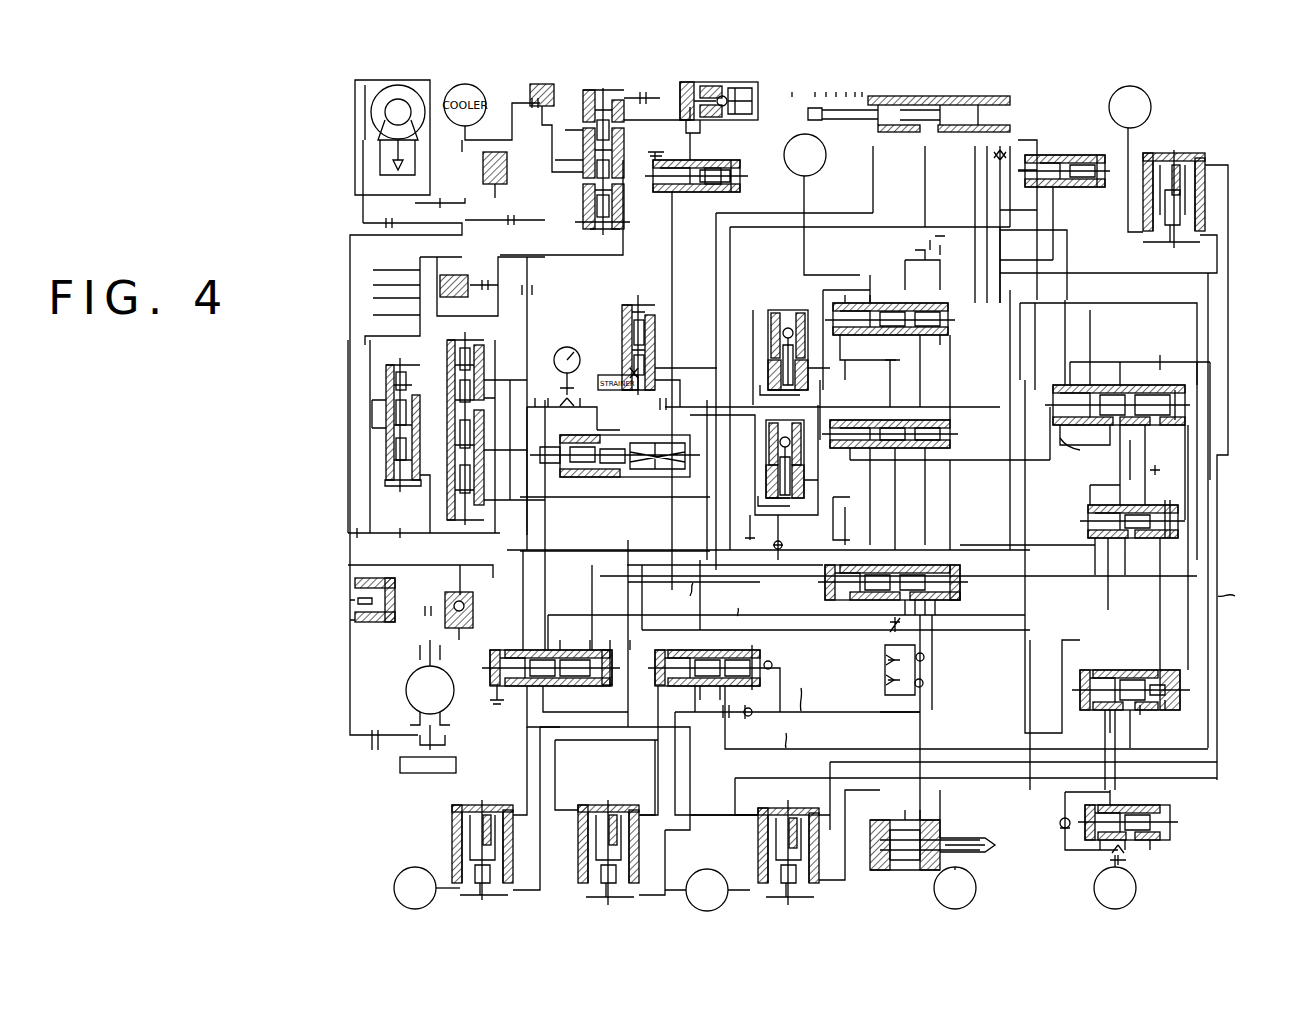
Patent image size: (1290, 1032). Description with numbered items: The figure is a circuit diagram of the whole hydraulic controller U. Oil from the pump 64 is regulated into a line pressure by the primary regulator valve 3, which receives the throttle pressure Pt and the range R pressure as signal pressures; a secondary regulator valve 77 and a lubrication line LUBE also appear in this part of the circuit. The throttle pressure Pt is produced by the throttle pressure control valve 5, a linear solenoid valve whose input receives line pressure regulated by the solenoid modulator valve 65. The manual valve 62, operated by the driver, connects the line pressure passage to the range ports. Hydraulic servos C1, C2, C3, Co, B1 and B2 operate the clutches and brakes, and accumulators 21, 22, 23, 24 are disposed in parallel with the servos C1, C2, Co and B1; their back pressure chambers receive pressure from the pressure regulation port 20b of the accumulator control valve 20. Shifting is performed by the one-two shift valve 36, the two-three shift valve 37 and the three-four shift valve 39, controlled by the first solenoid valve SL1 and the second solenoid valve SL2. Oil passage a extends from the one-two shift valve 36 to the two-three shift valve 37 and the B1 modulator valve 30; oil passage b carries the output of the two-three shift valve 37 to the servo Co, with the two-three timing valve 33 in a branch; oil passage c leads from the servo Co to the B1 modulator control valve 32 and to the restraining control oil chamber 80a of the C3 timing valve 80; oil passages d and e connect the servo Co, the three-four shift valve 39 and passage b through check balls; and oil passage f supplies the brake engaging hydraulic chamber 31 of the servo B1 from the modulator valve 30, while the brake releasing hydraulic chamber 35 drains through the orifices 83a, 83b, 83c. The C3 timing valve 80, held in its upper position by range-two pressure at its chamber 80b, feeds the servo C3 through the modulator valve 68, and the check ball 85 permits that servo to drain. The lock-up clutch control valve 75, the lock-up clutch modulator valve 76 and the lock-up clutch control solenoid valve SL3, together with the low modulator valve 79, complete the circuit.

The hydraulic controller U is at (318, 230).
The lock-up clutch control valve 75 is at (588, 92).
The lock-up clutch control solenoid valve SL3 is at (730, 80).
The lock-up clutch modulator valve 76 is at (746, 170).
The manual valve 62 is at (989, 94).
The low modulator valve 79 is at (1070, 151).
The accumulator 21 is at (1188, 150).
The hydraulic servo B2 is at (822, 204).
The hydraulic servo C1 is at (1130, 159).
The lubrication circuit LUBE is at (385, 297).
The secondary regulator valve 77 is at (374, 396).
The primary regulator valve 3 is at (504, 379).
The throttle pressure Pt is at (553, 392).
The solenoid modulator valve 65 is at (614, 324).
The throttle pressure control valve 5 is at (628, 436).
The first solenoid valve SL1 is at (767, 321).
The second solenoid valve SL2 is at (760, 462).
The 1-2 shift valve 36 is at (919, 297).
The 2-3 shift valve 37 is at (956, 440).
The B1 modulator valve 30 is at (1168, 383).
The B1 modulator control valve 32 is at (1189, 510).
The 3-4 shift valve 39 is at (968, 594).
The oil passage a is at (982, 399).
The oil passage b is at (687, 599).
The oil passage c is at (785, 730).
The oil passage d is at (800, 689).
The oil passage e is at (737, 601).
The oil passage f is at (1230, 595).
The orifice 83a is at (888, 628).
The orifice 83b is at (882, 658).
The orifice 83c is at (893, 692).
The accumulator control valve 20 is at (539, 642).
The pressure regulation port 20b is at (535, 688).
The 2-3 timing valve 33 is at (755, 664).
The C3 timing valve 80 is at (1189, 692).
The restraining control oil chamber 80a is at (1165, 705).
The restraining control oil chamber 80b is at (1145, 712).
The pump 64 is at (407, 690).
The accumulator 22 is at (447, 830).
The accumulator 23 is at (610, 798).
The accumulator 24 is at (753, 835).
The brake engaging hydraulic chamber 31 is at (912, 820).
The brake releasing hydraulic chamber 35 is at (940, 836).
The check ball 85 is at (1060, 822).
The modulator valve 68 is at (1182, 825).
The hydraulic servo C2 is at (427, 888).
The hydraulic servo C0 Co is at (707, 890).
The hydraulic servo B1 is at (955, 888).
The hydraulic servo C3 is at (1115, 882).